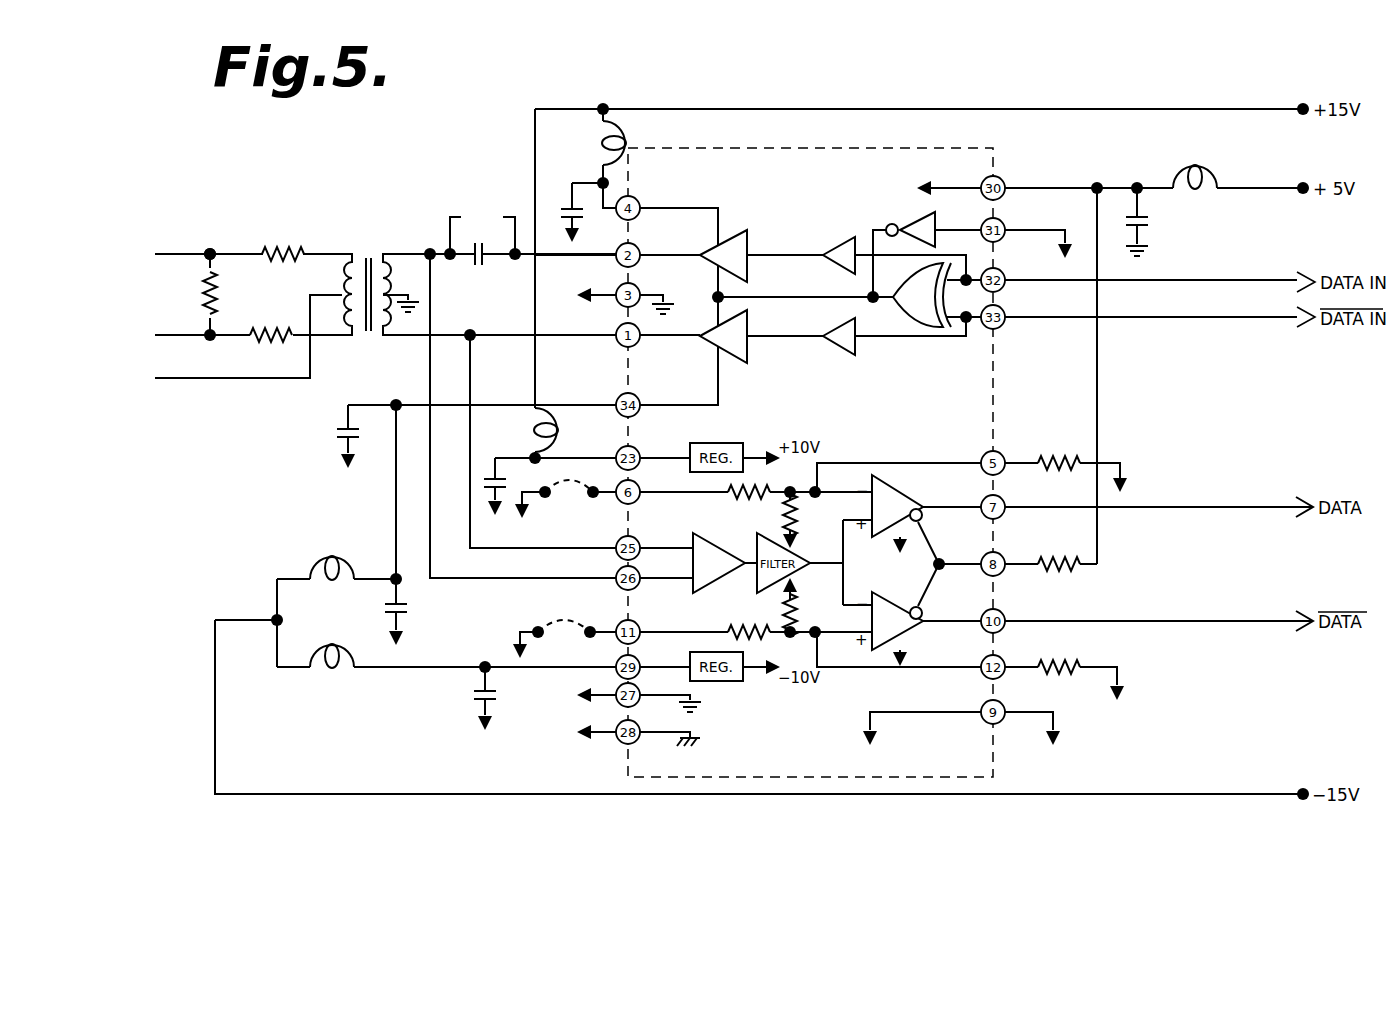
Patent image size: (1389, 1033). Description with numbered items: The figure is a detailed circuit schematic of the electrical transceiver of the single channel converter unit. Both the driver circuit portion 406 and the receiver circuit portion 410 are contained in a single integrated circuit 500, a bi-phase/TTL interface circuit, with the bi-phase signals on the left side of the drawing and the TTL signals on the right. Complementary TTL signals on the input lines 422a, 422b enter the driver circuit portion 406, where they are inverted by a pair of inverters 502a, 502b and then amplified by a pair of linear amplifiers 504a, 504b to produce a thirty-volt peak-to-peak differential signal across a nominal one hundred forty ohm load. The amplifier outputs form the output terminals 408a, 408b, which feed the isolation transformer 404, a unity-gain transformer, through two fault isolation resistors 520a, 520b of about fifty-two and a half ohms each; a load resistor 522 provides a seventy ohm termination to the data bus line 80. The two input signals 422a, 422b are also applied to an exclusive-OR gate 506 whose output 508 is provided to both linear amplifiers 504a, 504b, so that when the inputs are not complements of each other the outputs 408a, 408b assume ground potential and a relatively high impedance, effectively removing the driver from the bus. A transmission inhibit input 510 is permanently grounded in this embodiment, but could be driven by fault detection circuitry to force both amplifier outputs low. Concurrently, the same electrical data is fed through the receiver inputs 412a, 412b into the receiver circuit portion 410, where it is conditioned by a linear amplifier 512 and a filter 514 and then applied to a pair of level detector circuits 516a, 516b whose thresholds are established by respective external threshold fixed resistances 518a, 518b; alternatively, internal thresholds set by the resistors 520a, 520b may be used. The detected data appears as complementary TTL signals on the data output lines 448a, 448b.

The data bus line 80 is at (212, 252).
The fault isolation resistor 520a is at (283, 248).
The fault isolation resistor 520b is at (262, 333).
The load resistor 522 is at (202, 303).
The isolation transformer 404 is at (368, 252).
The output terminal 408a is at (598, 258).
The output terminal 408b is at (598, 342).
The receiver input 412a is at (482, 580).
The receiver input 412b is at (478, 456).
The linear amplifier 504a is at (775, 180).
The linear amplifier 504b is at (780, 385).
The inverter 502a is at (838, 236).
The inverter 502b is at (840, 350).
The exclusive-OR gate 506 is at (920, 318).
The output of the exclusive-OR gate 508 is at (778, 300).
The transmission inhibit input 510 is at (1040, 236).
The driver circuit portion 406 is at (952, 402).
The DATA IN input line 422a is at (1212, 280).
The complementary DATA IN input line 422b is at (1212, 318).
The linear amplifier 512 is at (695, 540).
The filter 514 is at (780, 536).
The level detector circuit 516a is at (900, 494).
The level detector circuit 516b is at (905, 636).
The external threshold fixed resistance 518a is at (1058, 410).
The external threshold fixed resistance 518b is at (1078, 664).
The data output line 448a is at (1236, 506).
The complementary data output line 448b is at (1212, 622).
The integrated circuit 500 is at (628, 777).
The receiver circuit portion 410 is at (802, 734).